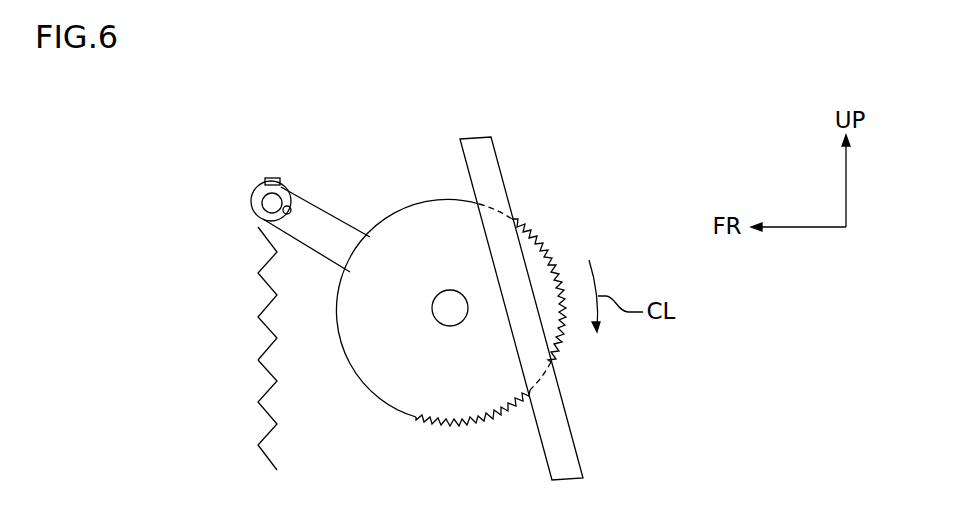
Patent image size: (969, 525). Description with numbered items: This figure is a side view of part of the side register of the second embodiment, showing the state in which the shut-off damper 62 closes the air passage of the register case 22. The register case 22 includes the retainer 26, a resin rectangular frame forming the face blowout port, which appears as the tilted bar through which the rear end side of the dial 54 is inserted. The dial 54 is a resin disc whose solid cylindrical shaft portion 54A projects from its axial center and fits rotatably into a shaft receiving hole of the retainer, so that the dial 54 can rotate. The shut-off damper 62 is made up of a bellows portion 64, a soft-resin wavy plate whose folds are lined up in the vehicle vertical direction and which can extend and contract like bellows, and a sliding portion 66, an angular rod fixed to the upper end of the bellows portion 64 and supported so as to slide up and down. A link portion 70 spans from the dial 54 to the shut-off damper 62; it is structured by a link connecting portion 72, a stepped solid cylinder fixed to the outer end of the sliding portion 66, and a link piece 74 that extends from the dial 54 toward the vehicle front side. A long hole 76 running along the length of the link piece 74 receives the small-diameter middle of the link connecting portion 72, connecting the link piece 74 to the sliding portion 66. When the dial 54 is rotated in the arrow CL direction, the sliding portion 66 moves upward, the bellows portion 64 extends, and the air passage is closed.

The retainer 26 is at (561, 308).
The register case 22 is at (567, 420).
The dial 54 is at (451, 340).
The shaft portion 54A is at (450, 290).
The shut-off damper 62 is at (222, 348).
The bellows portion 64 is at (258, 370).
The sliding portion 66 is at (272, 178).
The link portion 70 is at (299, 190).
The link connecting portion 72 is at (253, 206).
The link piece 74 is at (343, 223).
The long hole 76 is at (258, 227).